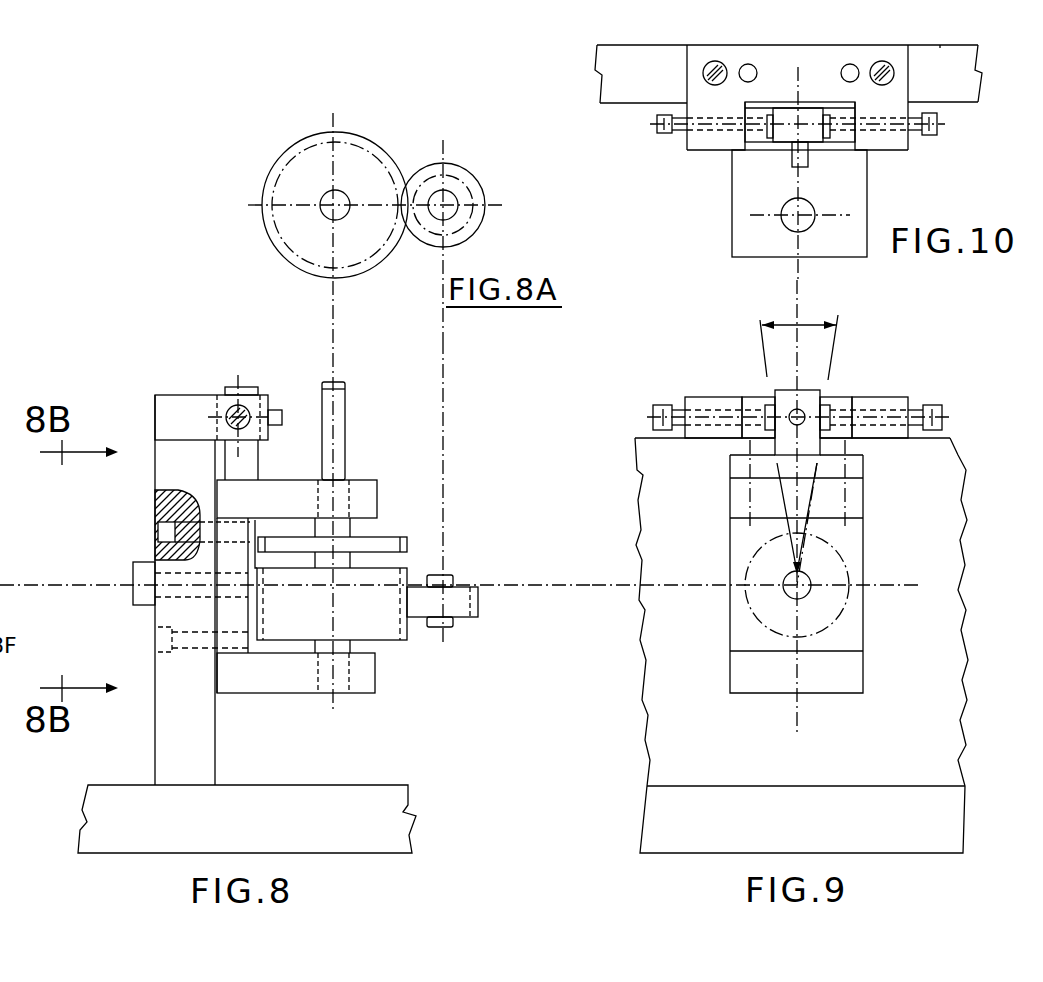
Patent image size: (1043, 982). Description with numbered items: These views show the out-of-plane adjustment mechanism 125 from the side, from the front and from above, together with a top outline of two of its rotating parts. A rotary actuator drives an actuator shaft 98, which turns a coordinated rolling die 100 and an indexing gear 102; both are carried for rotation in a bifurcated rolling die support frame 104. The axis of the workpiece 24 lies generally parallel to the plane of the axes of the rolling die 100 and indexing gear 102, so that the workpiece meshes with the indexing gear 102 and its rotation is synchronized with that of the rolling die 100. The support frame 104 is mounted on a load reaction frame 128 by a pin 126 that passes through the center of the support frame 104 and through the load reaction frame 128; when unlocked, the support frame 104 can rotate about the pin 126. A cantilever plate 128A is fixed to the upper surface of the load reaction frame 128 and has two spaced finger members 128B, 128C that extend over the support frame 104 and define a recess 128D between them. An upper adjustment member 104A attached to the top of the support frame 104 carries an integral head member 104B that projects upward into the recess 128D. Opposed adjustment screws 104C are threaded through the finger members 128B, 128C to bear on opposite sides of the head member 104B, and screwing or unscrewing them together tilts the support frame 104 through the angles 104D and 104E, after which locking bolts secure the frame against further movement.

In FIG. 8, the workpiece 24 is at (460, 598).
In FIG. 8A, the workpiece 24 is at (435, 176).
In FIG. 8, the actuator shaft 98 is at (340, 397).
In FIG. 8, the rolling die 100 is at (380, 617).
In FIG. 8, the indexing gear 102 is at (392, 541).
In FIG. 8A, the indexing gear 102 is at (312, 168).
In FIG. 8, the rolling die support frame 104 is at (360, 488).
In FIG. 9, the rolling die support frame 104 is at (777, 670).
In FIG. 10, the rolling die support frame 104 is at (757, 233).
In FIG. 9, the upper adjustment member 104A is at (740, 463).
In FIG. 9, the head member 104B is at (800, 410).
In FIG. 10, the head member 104B is at (812, 133).
In FIG. 9, the adjustment screws 104C is at (655, 405).
In FIG. 10, the adjustment screws 104C is at (660, 135).
In FIG. 9, the angle 104D is at (762, 322).
In FIG. 9, the angle 104E is at (835, 318).
In FIG. 8, the adjustment mechanism 125 is at (126, 731).
In FIG. 9, the adjustment mechanism 125 is at (983, 513).
In FIG. 8, the pin 126 is at (147, 572).
In FIG. 8, the load reaction frame 128 is at (197, 741).
In FIG. 10, the load reaction frame 128 is at (637, 73).
In FIG. 10, the cantilever plate 128A is at (893, 64).
In FIG. 10, the finger member 128B is at (718, 142).
In FIG. 10, the finger member 128C is at (900, 143).
In FIG. 9, the recess 128D is at (752, 397).
In FIG. 10, the recess 128D is at (757, 152).